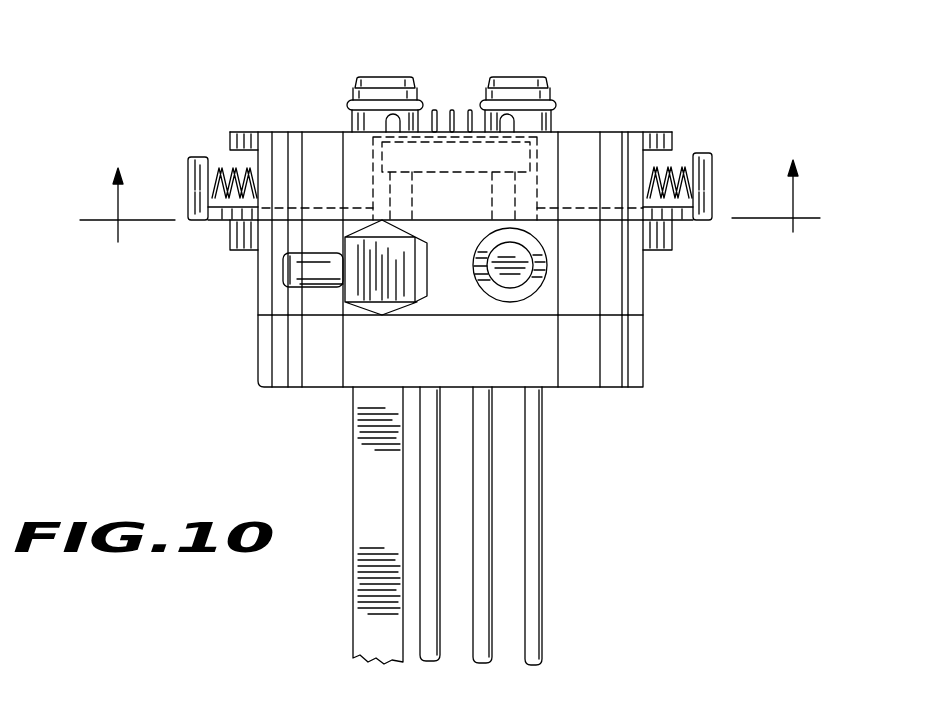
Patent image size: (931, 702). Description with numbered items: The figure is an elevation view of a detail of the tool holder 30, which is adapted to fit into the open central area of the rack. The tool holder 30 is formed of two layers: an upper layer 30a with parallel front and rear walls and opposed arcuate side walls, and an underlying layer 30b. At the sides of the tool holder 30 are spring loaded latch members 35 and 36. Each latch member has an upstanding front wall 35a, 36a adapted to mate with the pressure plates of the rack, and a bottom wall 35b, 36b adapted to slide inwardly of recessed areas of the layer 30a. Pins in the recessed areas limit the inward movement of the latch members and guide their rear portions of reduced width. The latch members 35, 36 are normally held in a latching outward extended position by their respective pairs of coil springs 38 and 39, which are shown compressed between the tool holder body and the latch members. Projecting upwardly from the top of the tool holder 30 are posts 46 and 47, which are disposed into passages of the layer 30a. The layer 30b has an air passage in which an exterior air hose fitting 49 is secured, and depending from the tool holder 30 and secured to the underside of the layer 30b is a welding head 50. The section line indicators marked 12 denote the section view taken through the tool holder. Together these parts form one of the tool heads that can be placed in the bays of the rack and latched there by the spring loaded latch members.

The section line indicator 12- 12 is at (448, 217).
The tool holder 30 is at (670, 116).
The layer 30a is at (600, 130).
The layer 30b is at (646, 300).
The latch member 35 is at (188, 191).
The upstanding front wall 35a is at (198, 157).
The bottom wall 35b is at (217, 223).
The latch member 36 is at (713, 206).
The upstanding front wall 36a is at (707, 153).
The bottom wall 36b is at (682, 222).
The coil springs 38 is at (237, 168).
The coil springs 39 is at (672, 168).
The post 46 is at (397, 77).
The post 47 is at (528, 75).
The air hose fitting 49 is at (303, 280).
The welding head 50 is at (558, 449).